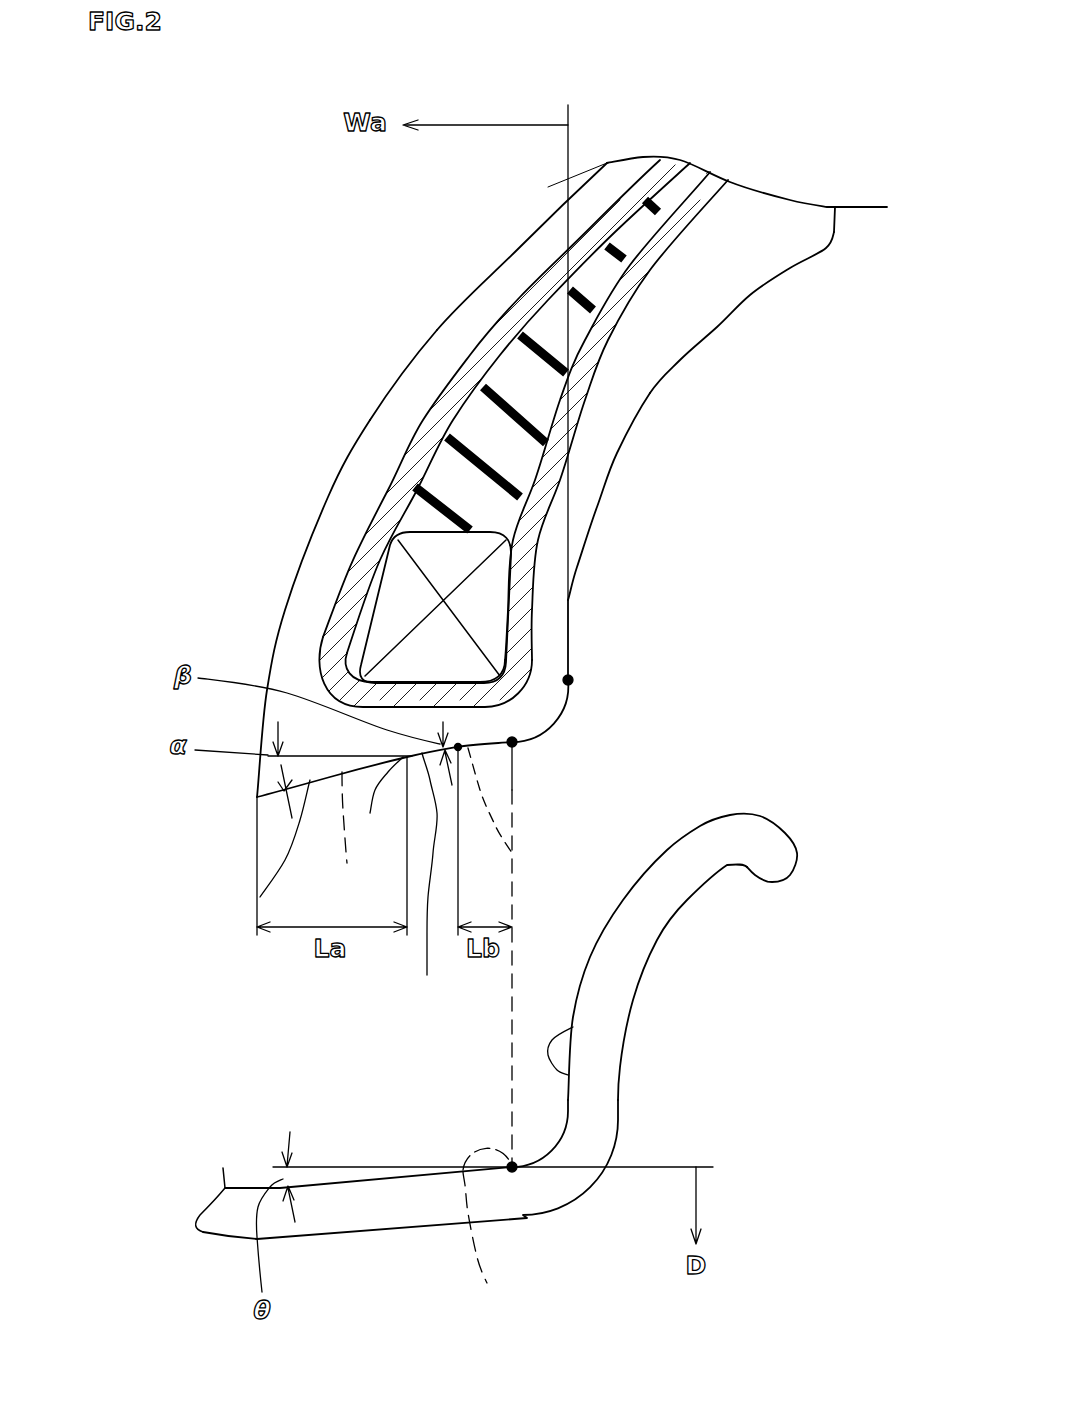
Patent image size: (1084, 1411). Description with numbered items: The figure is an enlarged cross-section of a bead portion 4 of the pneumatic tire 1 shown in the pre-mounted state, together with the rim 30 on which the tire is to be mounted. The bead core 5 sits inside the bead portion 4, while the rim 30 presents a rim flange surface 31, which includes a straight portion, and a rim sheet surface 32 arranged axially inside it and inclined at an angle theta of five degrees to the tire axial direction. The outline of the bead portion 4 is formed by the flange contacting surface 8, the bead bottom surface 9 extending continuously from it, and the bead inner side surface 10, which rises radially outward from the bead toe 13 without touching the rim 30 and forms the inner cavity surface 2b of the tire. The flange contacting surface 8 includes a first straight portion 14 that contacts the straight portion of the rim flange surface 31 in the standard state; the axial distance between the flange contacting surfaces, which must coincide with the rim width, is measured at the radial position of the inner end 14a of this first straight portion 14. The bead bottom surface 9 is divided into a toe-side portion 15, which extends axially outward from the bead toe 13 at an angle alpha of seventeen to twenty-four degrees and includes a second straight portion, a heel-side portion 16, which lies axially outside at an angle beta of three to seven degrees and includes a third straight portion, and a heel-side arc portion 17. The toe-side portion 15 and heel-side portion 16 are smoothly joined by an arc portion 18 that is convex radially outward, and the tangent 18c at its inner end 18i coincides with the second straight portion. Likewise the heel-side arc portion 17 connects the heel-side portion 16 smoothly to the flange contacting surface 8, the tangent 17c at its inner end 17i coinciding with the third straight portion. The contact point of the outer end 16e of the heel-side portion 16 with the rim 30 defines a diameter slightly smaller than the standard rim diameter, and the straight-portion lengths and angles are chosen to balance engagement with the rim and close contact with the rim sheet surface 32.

The pneumatic tire 1 is at (808, 318).
The bead portion 4 is at (665, 425).
The flange contacting surface 8 is at (612, 535).
The inner cavity surface 2b is at (328, 497).
The bead inner side surface 10 is at (285, 610).
The heel-side portion 16 is at (483, 747).
The bead core 5 is at (478, 598).
The first straight portion 14 is at (572, 633).
The radially inner end of the first straight portion 14a is at (568, 680).
The heel-side arc portion 17 is at (555, 720).
The inner end of the heel-side arc portion 17i is at (512, 742).
The bead toe 13 is at (257, 797).
The arc portion 18 is at (433, 883).
The inner end of the arc portion 18i is at (376, 803).
The tangent at the inner end of the arc portion 18c is at (352, 836).
The bead bottom surface 9 is at (278, 840).
The toe-side portion 15 is at (253, 910).
The tangent at the inner end of the heel-side arc portion 17c is at (512, 853).
The rim 30 is at (635, 923).
The rim flange surface 31 is at (573, 1027).
The rim sheet surface 32 is at (380, 1177).
The outer end of the heel-side portion 16e is at (491, 1235).